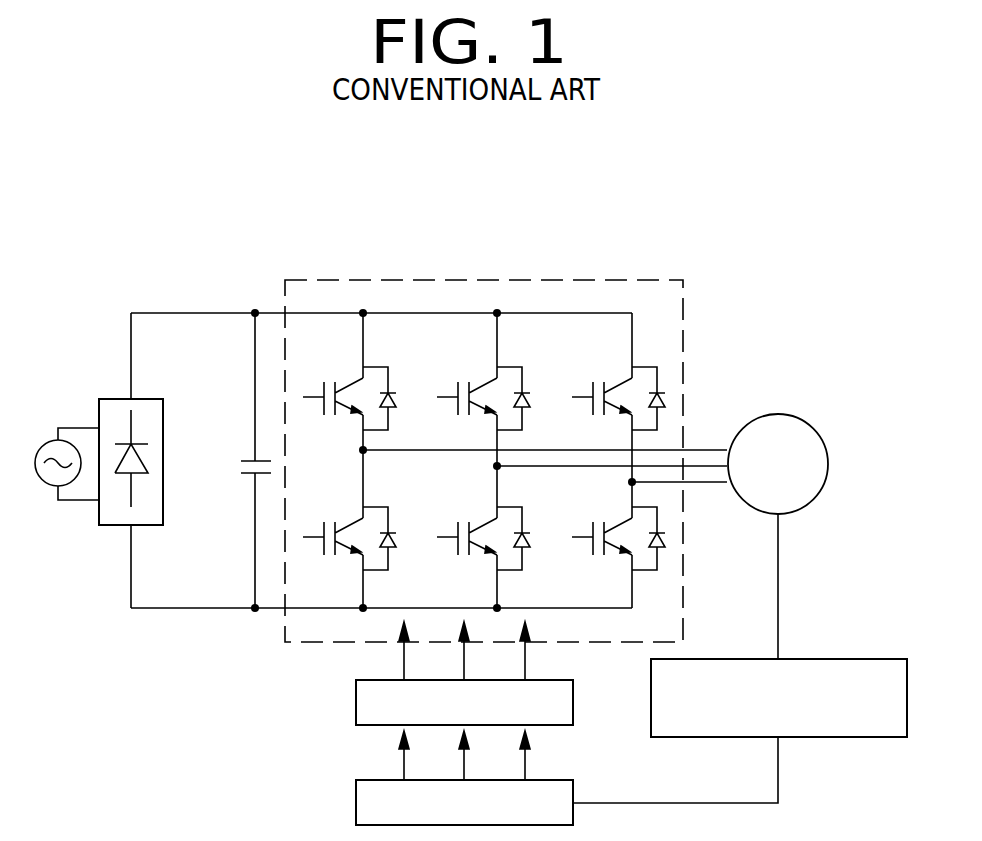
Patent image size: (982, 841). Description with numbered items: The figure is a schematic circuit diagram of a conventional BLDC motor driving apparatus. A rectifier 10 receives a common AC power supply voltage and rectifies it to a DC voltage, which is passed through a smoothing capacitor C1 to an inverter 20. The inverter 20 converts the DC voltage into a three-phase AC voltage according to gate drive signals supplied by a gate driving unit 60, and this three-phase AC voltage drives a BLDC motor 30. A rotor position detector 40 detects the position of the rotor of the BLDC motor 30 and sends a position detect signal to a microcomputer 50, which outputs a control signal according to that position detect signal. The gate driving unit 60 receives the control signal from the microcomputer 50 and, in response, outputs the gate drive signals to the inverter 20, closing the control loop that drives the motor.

The rectifier 10 is at (99, 411).
The smoothing capacitor C1 is at (242, 462).
The inverter 20 is at (512, 280).
The BLDC motor 30 is at (811, 424).
The rotor position detector 40 is at (866, 659).
The microcomputer 50 is at (356, 804).
The gate driving unit 60 is at (356, 703).